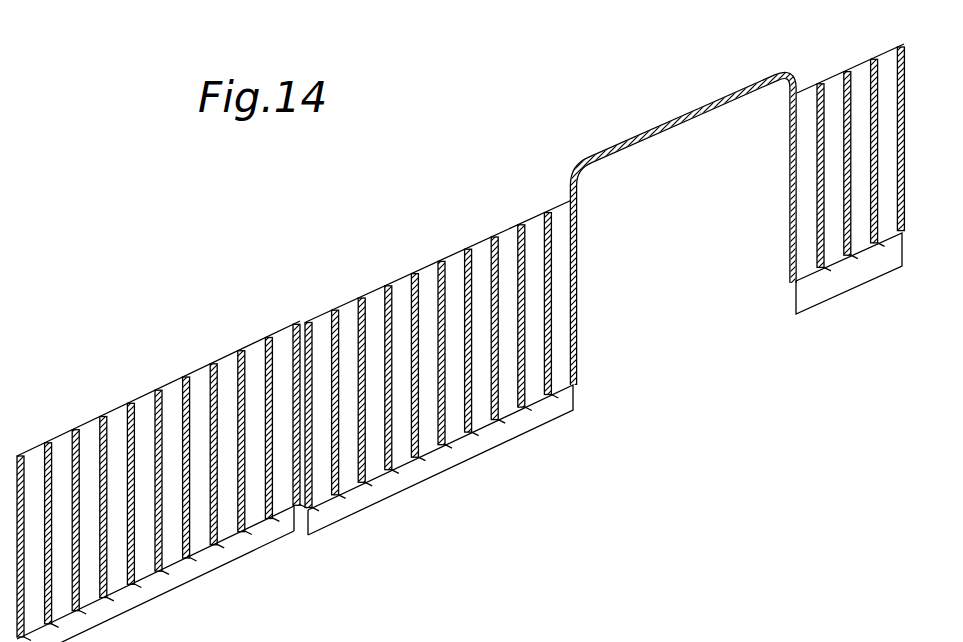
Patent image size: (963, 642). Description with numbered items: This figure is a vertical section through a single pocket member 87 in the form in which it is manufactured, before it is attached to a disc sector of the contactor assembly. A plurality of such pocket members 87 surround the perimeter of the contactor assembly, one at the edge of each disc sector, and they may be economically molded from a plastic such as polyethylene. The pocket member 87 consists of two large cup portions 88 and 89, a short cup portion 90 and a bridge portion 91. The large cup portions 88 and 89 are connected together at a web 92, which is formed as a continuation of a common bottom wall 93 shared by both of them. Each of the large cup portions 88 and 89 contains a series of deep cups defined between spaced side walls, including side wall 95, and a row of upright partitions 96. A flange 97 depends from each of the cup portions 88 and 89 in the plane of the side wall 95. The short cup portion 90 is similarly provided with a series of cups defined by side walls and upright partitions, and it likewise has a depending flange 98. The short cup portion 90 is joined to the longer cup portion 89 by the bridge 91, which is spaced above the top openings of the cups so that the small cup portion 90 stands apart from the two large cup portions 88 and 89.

The pocket member 87 is at (580, 345).
The large cup portion 88 is at (158, 474).
The large cup portion 89 is at (398, 277).
The short cup portion 90 is at (848, 68).
The bridge portion 91 is at (675, 118).
The web 92 is at (300, 512).
The common bottom wall 93 is at (168, 558).
The side wall 95 is at (227, 372).
The upright partition 96 is at (131, 431).
The flange 97 is at (222, 556).
The depending flange 98 is at (862, 268).